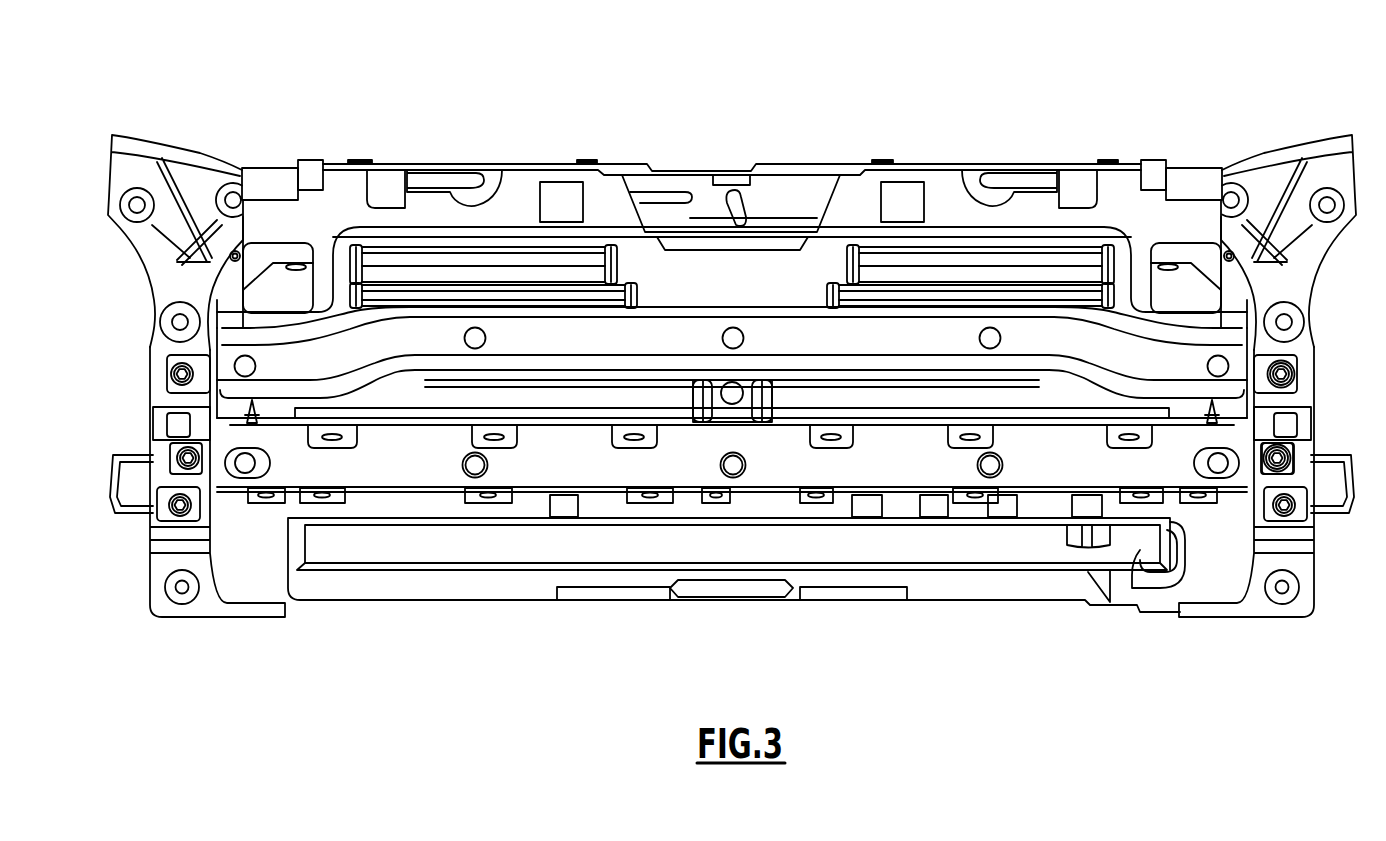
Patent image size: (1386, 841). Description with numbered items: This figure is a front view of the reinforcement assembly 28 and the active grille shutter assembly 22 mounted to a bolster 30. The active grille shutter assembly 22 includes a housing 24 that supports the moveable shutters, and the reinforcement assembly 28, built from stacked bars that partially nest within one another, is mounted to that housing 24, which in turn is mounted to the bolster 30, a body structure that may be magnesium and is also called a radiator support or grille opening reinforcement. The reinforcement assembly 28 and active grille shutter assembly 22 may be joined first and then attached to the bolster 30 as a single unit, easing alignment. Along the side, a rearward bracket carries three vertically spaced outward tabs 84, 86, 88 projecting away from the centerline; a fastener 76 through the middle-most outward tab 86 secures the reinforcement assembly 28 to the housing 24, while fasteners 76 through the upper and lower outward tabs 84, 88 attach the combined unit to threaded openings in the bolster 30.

The active grille shutter assembly 22 is at (488, 152).
The housing 24 is at (270, 183).
The reinforcement assembly 28 is at (158, 353).
The bolster 30 is at (193, 176).
The fasteners 76 is at (1294, 385).
The upper outward tab 84 is at (1290, 366).
The middle-most outward tab 86 is at (1290, 452).
The lower outward tab 88 is at (1276, 512).